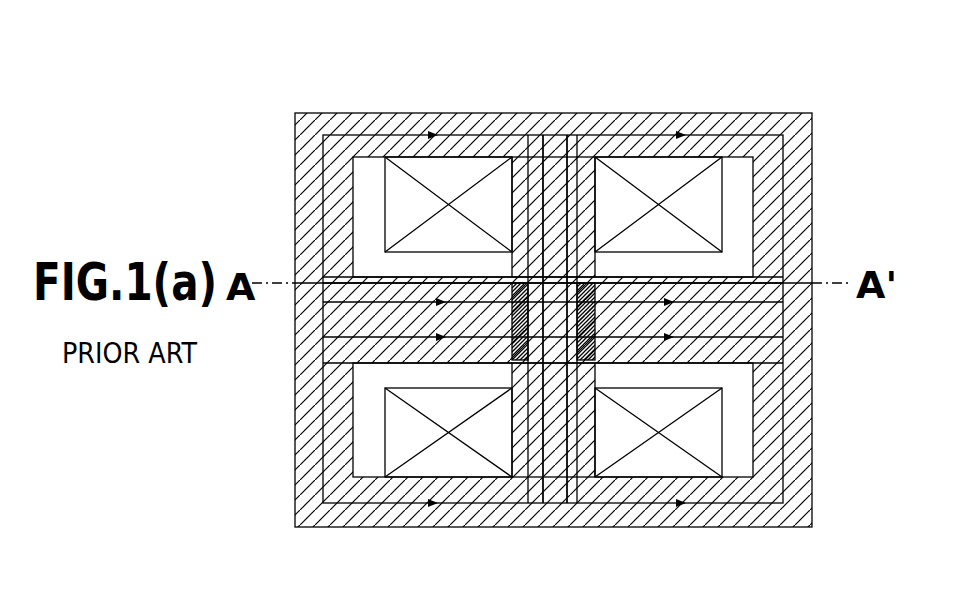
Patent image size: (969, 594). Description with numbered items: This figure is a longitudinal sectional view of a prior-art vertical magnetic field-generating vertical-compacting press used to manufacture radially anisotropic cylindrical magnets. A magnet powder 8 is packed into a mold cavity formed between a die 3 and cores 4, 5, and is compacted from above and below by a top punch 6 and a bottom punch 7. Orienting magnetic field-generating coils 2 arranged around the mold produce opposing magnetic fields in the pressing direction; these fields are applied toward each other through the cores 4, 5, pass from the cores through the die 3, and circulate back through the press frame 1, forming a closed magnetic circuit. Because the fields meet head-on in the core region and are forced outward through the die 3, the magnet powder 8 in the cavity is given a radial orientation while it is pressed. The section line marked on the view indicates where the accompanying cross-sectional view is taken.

The press frame 1 is at (812, 178).
The orienting magnetic field-generating coils 2 is at (722, 188).
The die 3 is at (615, 318).
The core 4 is at (562, 165).
The core 5 is at (583, 362).
The top punch 6 is at (534, 160).
The bottom punch 7 is at (520, 362).
The magnet powder 8 is at (571, 362).